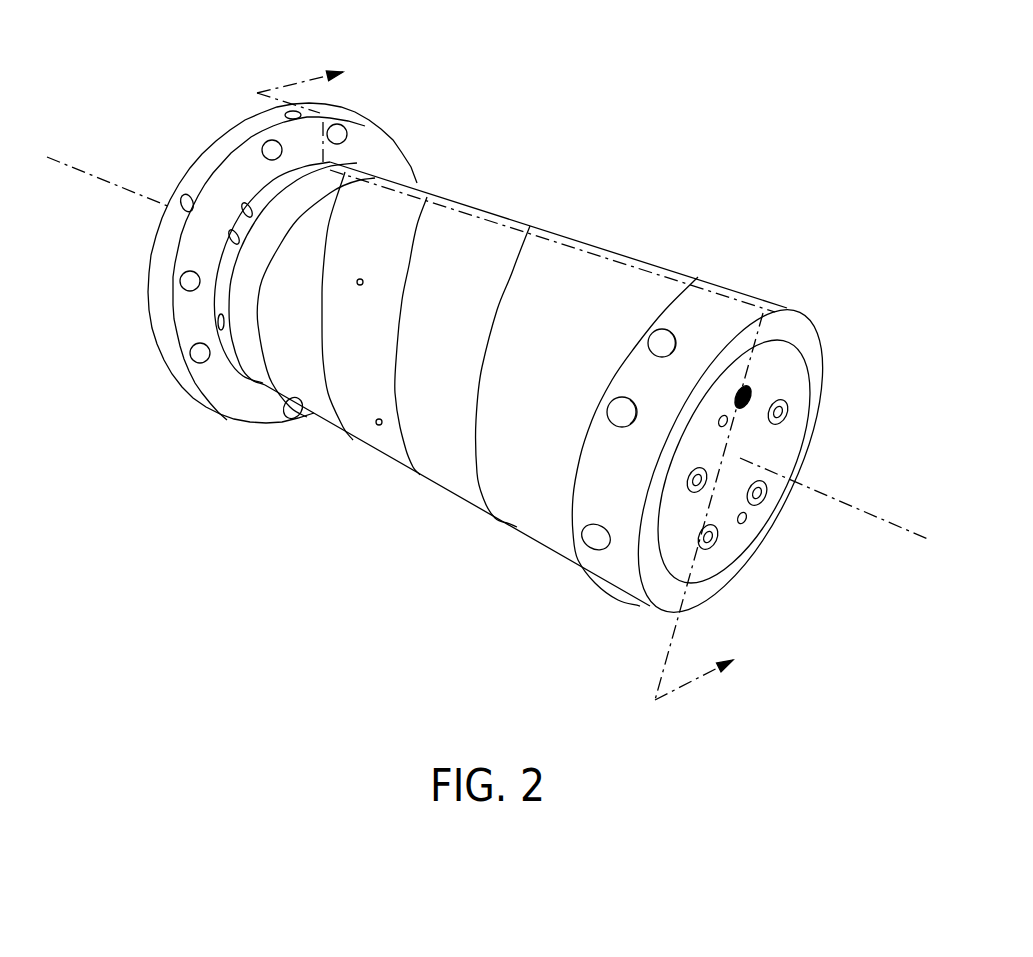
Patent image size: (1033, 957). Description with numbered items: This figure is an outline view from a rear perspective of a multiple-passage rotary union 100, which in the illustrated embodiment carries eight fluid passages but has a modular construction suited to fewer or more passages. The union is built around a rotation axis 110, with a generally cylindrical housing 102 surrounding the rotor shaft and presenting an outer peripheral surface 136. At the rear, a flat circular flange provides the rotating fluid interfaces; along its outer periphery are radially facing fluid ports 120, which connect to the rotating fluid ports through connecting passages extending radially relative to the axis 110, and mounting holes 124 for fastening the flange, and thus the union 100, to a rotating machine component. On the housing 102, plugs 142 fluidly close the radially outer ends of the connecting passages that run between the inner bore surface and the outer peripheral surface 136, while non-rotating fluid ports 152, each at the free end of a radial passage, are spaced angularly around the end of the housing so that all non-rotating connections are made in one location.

The rotary union 100 is at (708, 125).
The housing 102 is at (437, 468).
The rotation axis 110 is at (848, 500).
The radially facing fluid port 120 is at (187, 208).
The mounting holes 124 is at (266, 149).
The outer peripheral surface 136 is at (603, 300).
The plug 142 is at (363, 279).
The non-rotating fluid port 152 is at (617, 397).